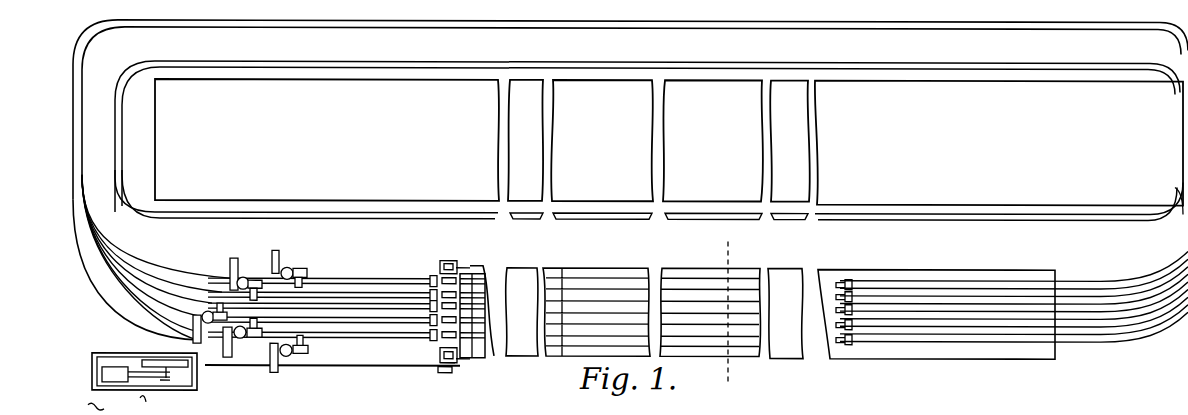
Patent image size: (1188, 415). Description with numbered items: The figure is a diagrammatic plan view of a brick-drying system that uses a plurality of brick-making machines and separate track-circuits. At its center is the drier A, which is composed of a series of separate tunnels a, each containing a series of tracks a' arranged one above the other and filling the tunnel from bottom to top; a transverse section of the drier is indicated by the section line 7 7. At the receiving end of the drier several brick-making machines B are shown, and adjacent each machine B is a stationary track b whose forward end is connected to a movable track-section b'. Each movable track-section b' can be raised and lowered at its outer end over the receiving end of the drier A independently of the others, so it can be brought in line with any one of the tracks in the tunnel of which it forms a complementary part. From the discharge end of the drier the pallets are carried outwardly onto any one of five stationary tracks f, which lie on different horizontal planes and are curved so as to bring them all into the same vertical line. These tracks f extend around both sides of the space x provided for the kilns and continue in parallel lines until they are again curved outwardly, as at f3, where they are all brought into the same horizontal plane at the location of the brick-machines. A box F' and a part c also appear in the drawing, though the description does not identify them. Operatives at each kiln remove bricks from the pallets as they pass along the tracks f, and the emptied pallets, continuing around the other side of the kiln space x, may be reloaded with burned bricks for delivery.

The outward curve of the tracks f3 is at (156, 257).
The stationary tracks f is at (1012, 310).
The cable housing box F' is at (936, 302).
The space for the kilns x is at (999, 143).
The drier A is at (778, 301).
The section line 7 is at (727, 315).
The brick-making machines B is at (250, 311).
The stationary track b is at (310, 311).
The movable track-section b' is at (319, 271).
The tunnels a is at (473, 335).
The tracks a' is at (486, 337).
The car end c is at (1180, 217).